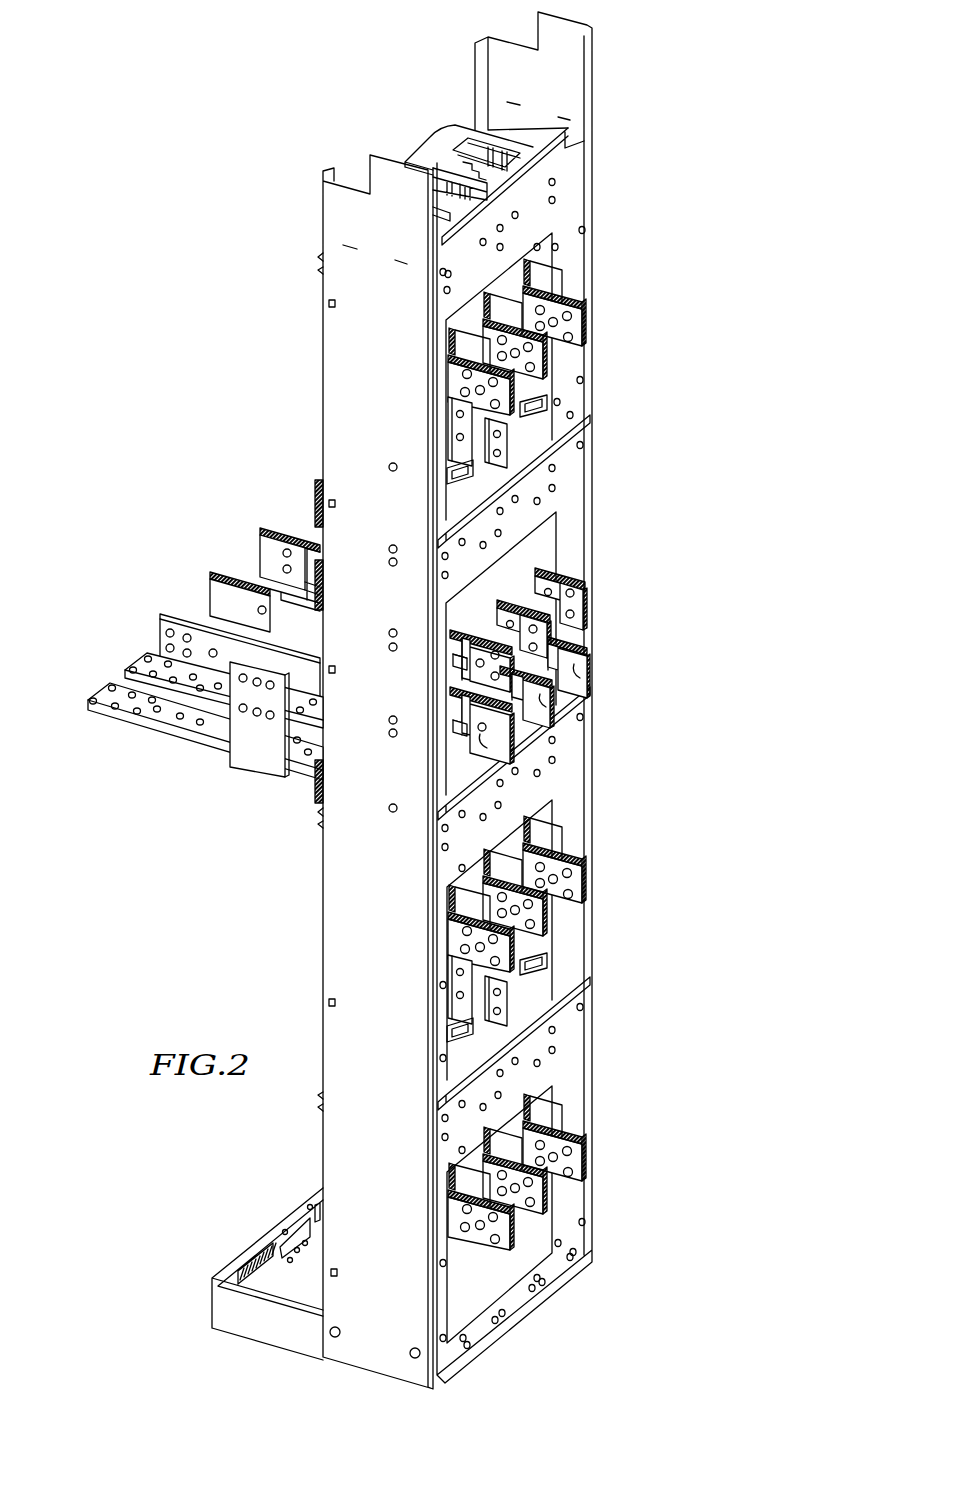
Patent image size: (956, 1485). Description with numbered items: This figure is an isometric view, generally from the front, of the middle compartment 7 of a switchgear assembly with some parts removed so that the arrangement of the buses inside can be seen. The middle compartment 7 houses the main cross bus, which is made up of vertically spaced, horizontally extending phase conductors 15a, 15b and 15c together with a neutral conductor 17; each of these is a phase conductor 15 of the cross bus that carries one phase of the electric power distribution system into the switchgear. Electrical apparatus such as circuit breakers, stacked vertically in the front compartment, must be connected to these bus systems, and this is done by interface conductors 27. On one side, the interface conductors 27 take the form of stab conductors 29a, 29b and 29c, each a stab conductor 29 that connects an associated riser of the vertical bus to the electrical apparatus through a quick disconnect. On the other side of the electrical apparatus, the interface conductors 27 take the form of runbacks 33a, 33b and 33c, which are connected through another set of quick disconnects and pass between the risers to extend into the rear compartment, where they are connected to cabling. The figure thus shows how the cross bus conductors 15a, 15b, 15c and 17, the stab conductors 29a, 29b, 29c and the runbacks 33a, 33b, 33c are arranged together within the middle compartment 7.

The middle compartment 7 is at (327, 210).
The phase conductor 15 is at (232, 910).
The phase conductor 15a is at (316, 485).
The phase conductor 15b is at (323, 583).
The phase conductor 15c is at (312, 785).
The neutral conductor 17 is at (250, 748).
The interface conductors 27 is at (618, 621).
The stab conductor 29 is at (597, 290).
The stab conductor 29a is at (477, 682).
The stab conductor 29b is at (518, 600).
The stab conductor 29c is at (578, 597).
The runback 33a is at (168, 612).
The runback 33b is at (222, 572).
The runback 33c is at (272, 528).